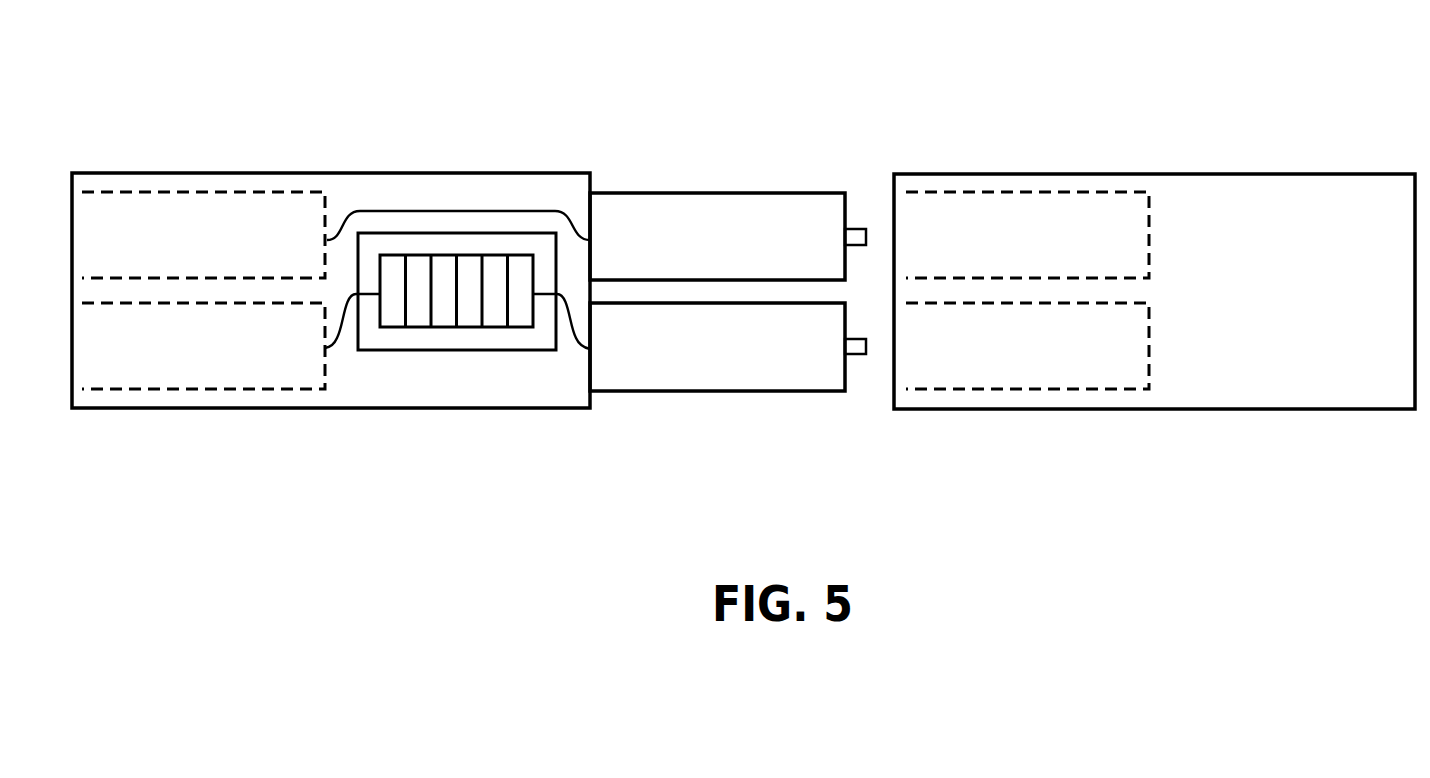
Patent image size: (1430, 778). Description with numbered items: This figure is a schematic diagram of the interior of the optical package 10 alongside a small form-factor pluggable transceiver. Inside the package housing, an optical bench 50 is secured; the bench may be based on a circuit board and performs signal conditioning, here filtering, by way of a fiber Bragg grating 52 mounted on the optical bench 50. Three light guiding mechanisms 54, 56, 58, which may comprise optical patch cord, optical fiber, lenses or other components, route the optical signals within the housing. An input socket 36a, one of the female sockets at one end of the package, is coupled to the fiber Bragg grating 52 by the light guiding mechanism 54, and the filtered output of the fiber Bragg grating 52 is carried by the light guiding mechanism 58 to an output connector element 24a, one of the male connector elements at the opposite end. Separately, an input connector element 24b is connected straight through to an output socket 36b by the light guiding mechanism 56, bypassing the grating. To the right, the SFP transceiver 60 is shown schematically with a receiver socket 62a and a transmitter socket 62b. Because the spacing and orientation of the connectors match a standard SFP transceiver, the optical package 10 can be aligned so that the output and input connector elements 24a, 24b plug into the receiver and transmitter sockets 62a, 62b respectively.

The optical package 10 is at (522, 57).
The output connector element 24a is at (694, 391).
The input connector element 24b is at (692, 193).
The input socket 36a is at (190, 390).
The output socket 36b is at (187, 173).
The optical bench 50 is at (380, 350).
The fiber Bragg grating 52 is at (440, 327).
The light guiding mechanism 54 is at (337, 340).
The light guiding mechanism 56 is at (453, 211).
The light guiding mechanism 58 is at (577, 343).
The SFP transceiver 60 is at (1205, 174).
The receiver socket 62a is at (1040, 390).
The transmitter socket 62b is at (1035, 193).